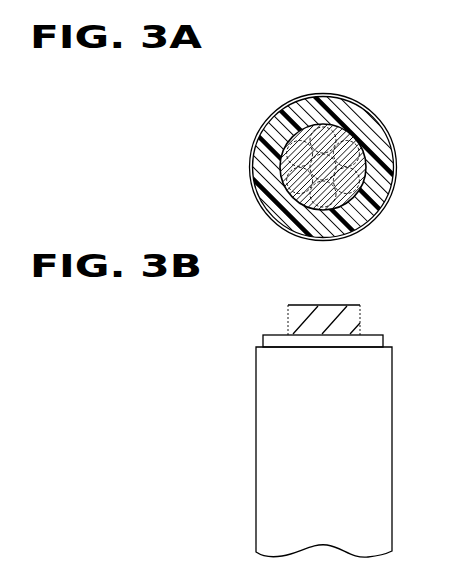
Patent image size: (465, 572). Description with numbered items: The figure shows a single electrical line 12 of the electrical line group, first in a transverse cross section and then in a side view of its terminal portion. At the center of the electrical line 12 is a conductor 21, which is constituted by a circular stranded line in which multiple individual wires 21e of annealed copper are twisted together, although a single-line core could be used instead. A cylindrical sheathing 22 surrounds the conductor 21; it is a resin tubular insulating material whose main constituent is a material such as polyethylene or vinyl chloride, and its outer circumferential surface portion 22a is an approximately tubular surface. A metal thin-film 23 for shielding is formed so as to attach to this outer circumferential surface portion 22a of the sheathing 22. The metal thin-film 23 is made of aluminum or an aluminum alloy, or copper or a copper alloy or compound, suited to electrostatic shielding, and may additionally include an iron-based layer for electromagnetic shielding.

In FIG. 3A, the electrical line 12 is at (337, 158).
In FIG. 3A, the conductor 21 is at (365, 175).
In FIG. 3B, the conductor 21 is at (353, 316).
In FIG. 3A, the individual wires 21e is at (318, 122).
In FIG. 3A, the sheathing 22 is at (356, 220).
In FIG. 3A, the outer circumferential surface portion 22a is at (287, 105).
In FIG. 3B, the outer circumferential surface portion 22a is at (262, 340).
In FIG. 3A, the metal thin-film 23 is at (389, 135).
In FIG. 3B, the metal thin-film 23 is at (382, 430).